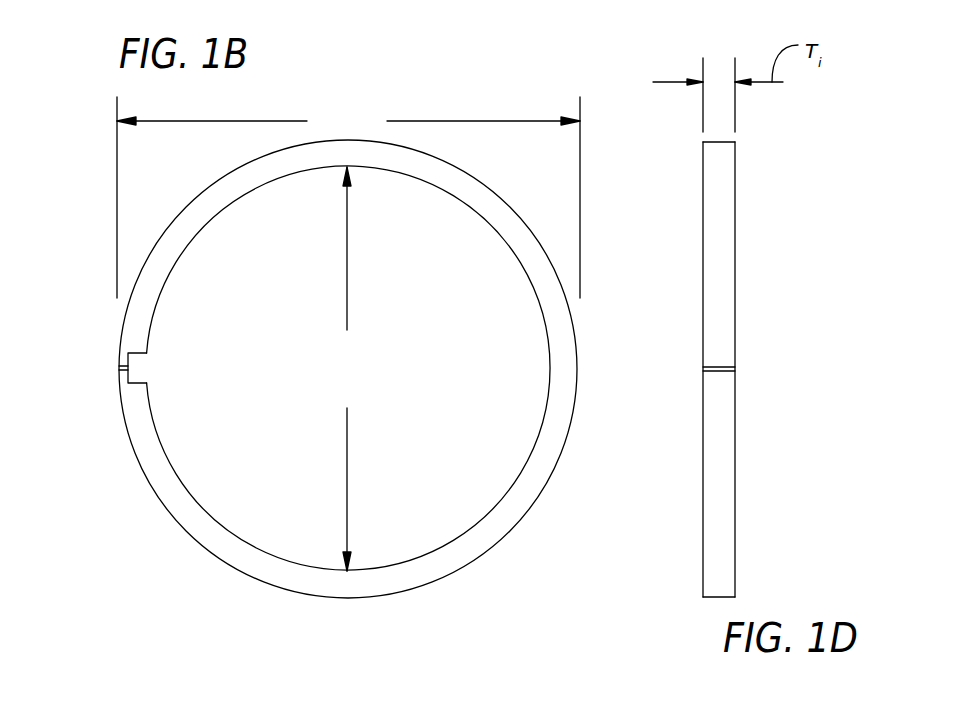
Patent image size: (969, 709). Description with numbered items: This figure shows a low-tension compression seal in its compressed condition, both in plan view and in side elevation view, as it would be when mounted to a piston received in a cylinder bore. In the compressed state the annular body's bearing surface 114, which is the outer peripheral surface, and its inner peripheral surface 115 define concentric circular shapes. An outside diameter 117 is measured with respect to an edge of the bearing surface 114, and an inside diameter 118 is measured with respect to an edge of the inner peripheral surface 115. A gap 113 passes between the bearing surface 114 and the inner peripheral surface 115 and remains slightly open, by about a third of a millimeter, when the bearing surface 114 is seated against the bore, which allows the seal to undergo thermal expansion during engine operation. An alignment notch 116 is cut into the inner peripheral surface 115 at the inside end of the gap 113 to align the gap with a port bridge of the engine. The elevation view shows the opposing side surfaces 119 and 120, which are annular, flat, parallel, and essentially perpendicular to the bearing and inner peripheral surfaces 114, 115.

In FIG. 1B, the gap 113 is at (119, 368).
In FIG. 1D, the gap 113 is at (703, 368).
In FIG. 1B, the bearing surface 114 is at (492, 547).
In FIG. 1D, the bearing surface 114 is at (718, 369).
In FIG. 1B, the inner peripheral surface 115 is at (203, 510).
In FIG. 1B, the alignment notch 116 is at (135, 378).
In FIG. 1B, the outside diameter 117 is at (462, 121).
In FIG. 1B, the inside diameter 118 is at (347, 297).
In FIG. 1B, the side surface 119 is at (348, 377).
In FIG. 1D, the side surface 119 is at (735, 513).
In FIG. 1D, the side surface 120 is at (703, 525).